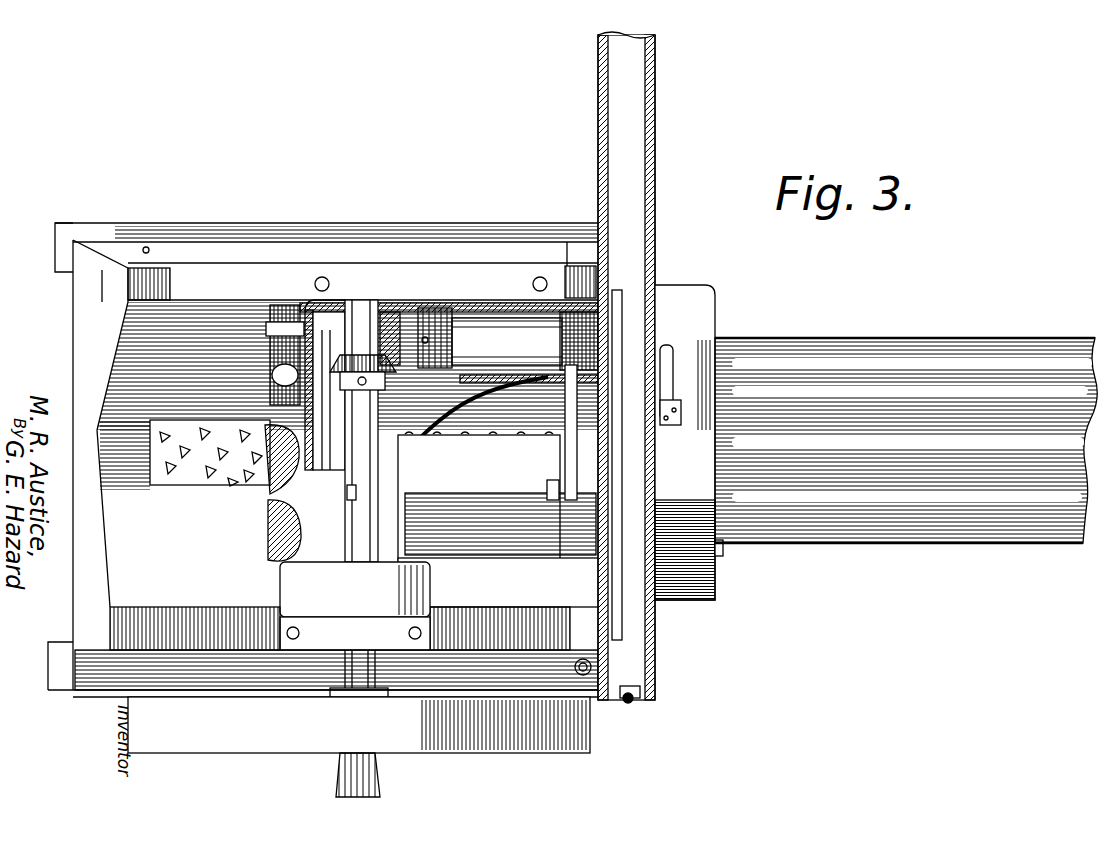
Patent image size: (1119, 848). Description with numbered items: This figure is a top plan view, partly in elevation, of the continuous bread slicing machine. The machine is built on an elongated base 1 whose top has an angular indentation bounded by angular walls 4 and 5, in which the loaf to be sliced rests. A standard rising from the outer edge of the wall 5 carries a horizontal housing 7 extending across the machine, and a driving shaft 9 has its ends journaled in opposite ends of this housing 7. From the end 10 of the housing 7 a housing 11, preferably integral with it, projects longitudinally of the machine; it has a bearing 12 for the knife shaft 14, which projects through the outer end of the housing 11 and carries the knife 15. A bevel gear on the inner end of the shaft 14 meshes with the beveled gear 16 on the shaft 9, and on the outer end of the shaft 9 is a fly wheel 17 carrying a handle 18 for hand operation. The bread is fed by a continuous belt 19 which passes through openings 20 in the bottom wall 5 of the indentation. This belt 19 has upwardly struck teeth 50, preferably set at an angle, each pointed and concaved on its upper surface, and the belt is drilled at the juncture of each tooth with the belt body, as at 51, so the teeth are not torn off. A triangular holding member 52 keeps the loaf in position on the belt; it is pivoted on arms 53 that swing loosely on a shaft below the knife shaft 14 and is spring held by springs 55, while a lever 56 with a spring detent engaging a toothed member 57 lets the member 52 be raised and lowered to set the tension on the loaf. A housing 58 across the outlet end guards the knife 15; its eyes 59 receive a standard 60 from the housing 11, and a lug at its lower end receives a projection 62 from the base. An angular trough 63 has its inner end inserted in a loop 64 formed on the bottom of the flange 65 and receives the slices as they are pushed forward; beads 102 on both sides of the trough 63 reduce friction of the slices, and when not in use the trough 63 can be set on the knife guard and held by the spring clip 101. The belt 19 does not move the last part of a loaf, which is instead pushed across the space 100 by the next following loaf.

The base 1 is at (160, 243).
The angular wall 4 is at (140, 358).
The angular wall 5 is at (323, 629).
The horizontal housing 7 is at (280, 489).
The driving shaft 9 is at (362, 480).
The end of the housing 10 is at (333, 300).
The housing 11 is at (460, 318).
The bearing 12 is at (445, 318).
The knife shaft 14 is at (525, 341).
The knife 15 is at (384, 330).
The beveled gear 16 is at (410, 438).
The fly wheel 17 is at (494, 752).
The handle 18 is at (368, 780).
The continuous belt 19 is at (212, 470).
The openings 20 is at (150, 428).
The upwardly struck teeth 50 is at (243, 433).
The drilled openings 51 is at (211, 457).
The holding member 52 is at (513, 545).
The arms 53 is at (332, 497).
The springs 55 is at (479, 496).
The lever 56 is at (262, 352).
The toothed member 57 is at (292, 360).
The housing 58 is at (652, 228).
The eyes 59 is at (578, 660).
The standard 60 is at (592, 670).
The projection 62 is at (614, 633).
The angular trough 63 is at (906, 440).
The loop 64 is at (723, 548).
The flange 65 is at (667, 292).
The space 100 is at (577, 470).
The spring clip 101 is at (678, 340).
The beads 102 is at (992, 398).